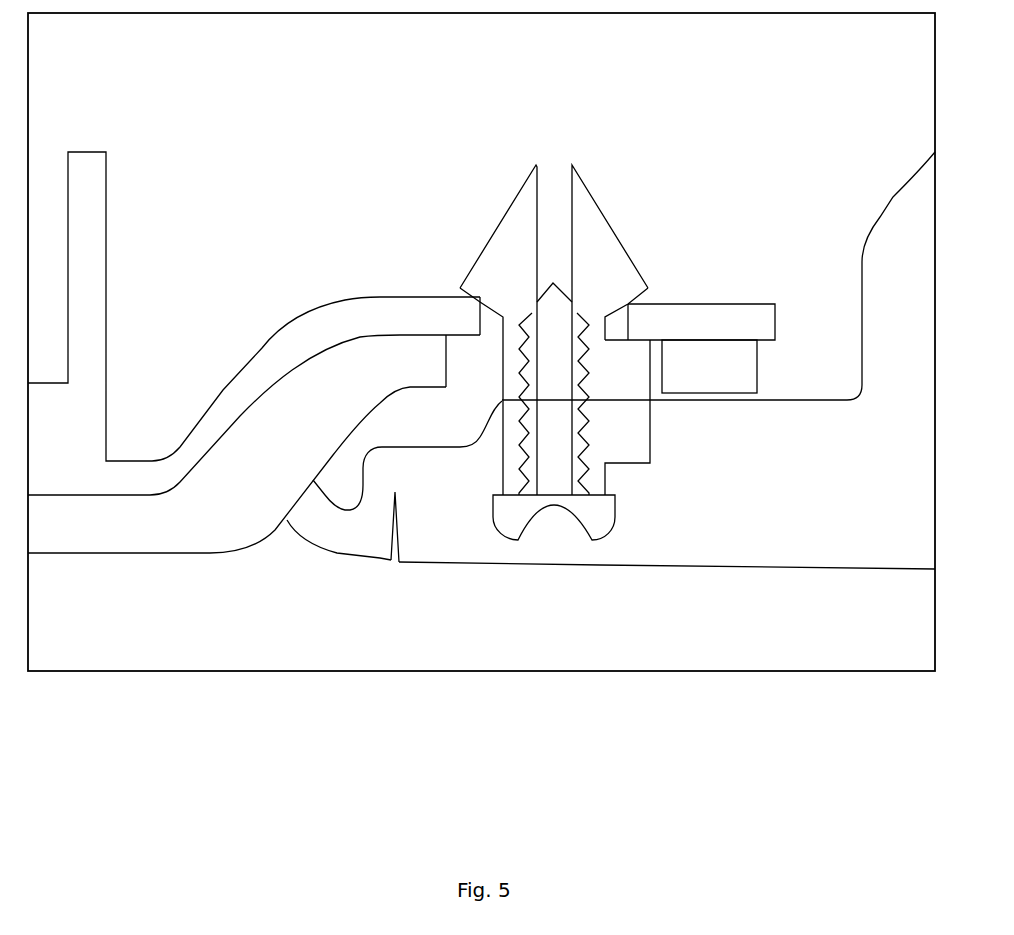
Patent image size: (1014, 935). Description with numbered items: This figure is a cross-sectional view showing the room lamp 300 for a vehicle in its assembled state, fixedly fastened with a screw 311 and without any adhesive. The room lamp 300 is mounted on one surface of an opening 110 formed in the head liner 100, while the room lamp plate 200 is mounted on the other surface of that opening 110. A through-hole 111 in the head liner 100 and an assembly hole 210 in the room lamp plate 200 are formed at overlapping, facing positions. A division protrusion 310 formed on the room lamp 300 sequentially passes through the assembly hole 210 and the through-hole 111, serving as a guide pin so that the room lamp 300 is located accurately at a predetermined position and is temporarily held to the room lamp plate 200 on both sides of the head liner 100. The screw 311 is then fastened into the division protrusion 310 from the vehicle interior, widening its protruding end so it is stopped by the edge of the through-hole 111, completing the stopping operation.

The head liner 100 is at (213, 518).
The opening 110 is at (812, 315).
The through-hole 111 is at (443, 370).
The room lamp plate 200 is at (338, 312).
The assembly hole 210 is at (481, 303).
The room lamp 300 is at (793, 520).
The division protrusion 310 is at (608, 247).
The screw 311 is at (560, 465).